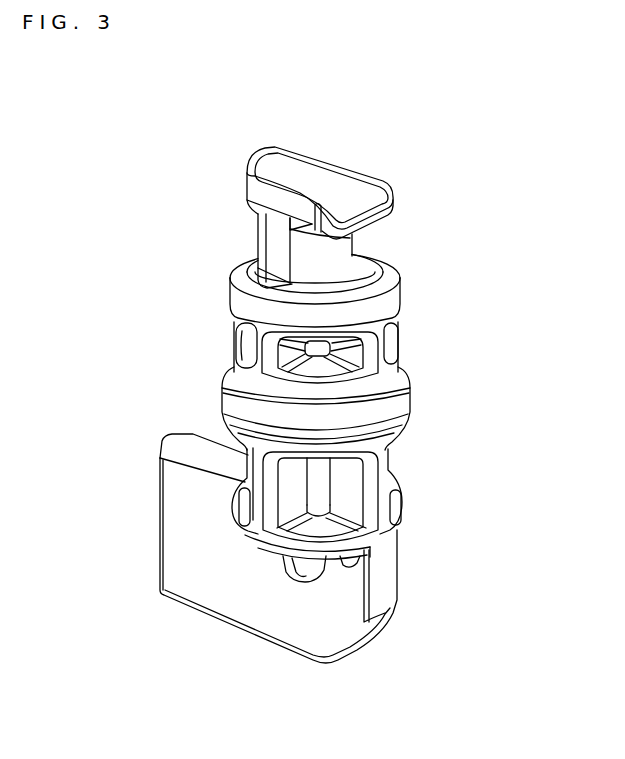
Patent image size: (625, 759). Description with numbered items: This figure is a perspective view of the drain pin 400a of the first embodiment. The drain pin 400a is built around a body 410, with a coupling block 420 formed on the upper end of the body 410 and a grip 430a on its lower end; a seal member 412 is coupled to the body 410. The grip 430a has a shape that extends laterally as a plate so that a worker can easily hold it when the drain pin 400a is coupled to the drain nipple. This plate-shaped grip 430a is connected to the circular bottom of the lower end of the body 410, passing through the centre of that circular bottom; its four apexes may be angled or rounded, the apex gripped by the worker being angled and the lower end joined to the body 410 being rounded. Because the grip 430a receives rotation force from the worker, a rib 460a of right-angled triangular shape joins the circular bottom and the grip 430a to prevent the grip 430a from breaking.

The drain pin 400a is at (214, 145).
The coupling block 420 is at (333, 177).
The body 410 is at (243, 478).
The seal member 412 is at (397, 383).
The grip 430a is at (183, 546).
The rib 460a is at (308, 566).